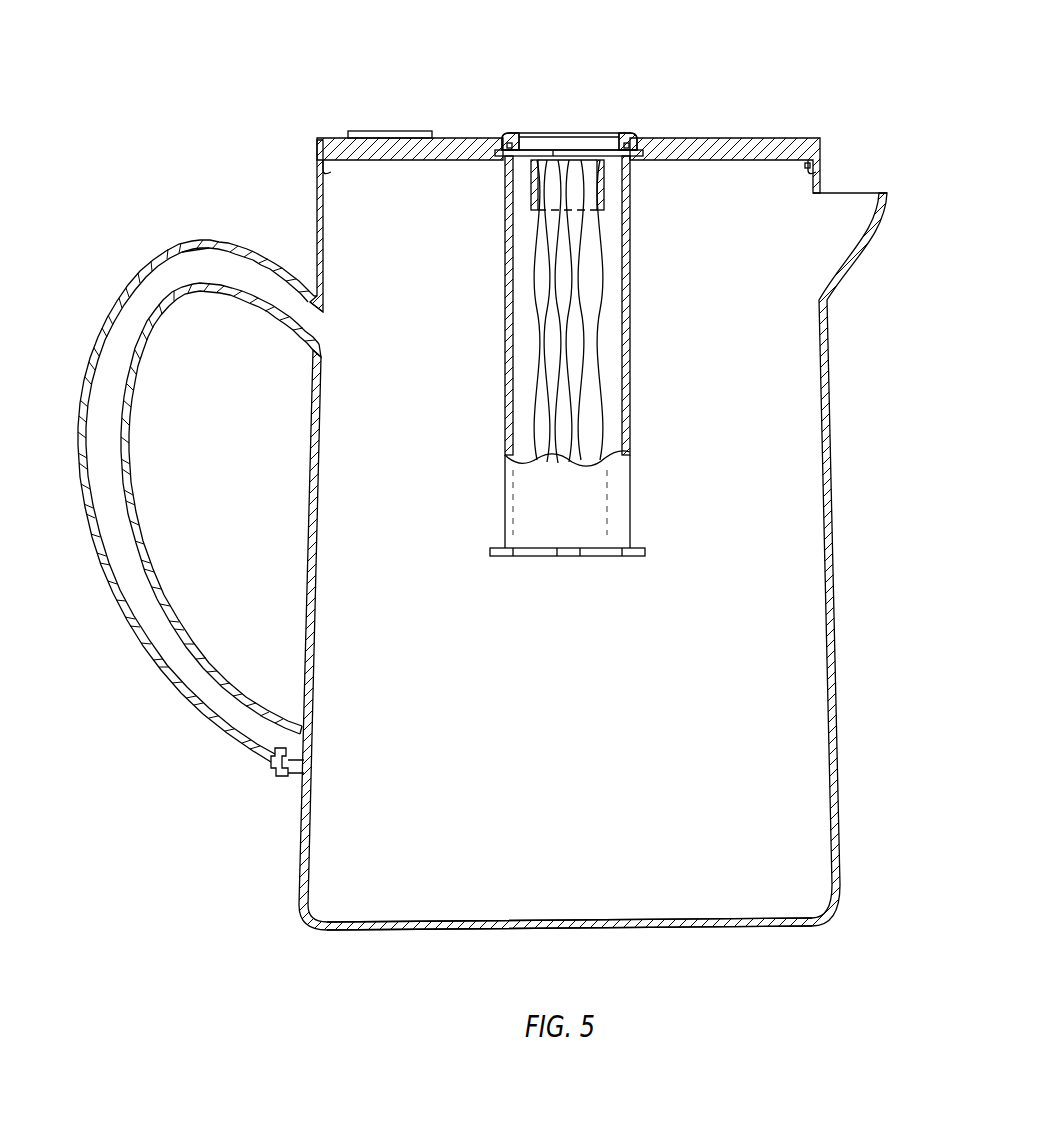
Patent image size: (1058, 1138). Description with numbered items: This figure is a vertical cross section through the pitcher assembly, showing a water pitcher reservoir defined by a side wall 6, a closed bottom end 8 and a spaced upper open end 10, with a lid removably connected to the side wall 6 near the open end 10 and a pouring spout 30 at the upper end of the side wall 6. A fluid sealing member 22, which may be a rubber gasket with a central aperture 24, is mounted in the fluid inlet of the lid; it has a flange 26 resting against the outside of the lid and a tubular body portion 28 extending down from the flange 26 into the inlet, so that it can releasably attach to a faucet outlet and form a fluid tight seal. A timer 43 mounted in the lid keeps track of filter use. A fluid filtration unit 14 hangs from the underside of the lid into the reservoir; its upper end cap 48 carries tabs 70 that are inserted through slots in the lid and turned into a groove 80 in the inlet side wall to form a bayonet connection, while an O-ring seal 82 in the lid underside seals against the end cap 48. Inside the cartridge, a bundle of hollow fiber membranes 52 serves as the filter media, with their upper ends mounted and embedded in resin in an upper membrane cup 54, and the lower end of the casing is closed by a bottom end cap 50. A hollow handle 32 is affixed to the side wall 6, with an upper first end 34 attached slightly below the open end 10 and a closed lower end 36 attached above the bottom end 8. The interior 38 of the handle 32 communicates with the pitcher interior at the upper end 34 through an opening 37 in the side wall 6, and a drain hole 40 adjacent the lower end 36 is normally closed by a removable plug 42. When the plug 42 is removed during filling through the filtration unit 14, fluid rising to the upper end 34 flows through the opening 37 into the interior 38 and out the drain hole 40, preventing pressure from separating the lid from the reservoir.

The side wall 6 is at (838, 650).
The closed bottom end 8 is at (683, 926).
The upper open end 10 is at (800, 143).
The fluid filtration unit 14 is at (634, 379).
The fluid sealing member 22 is at (632, 135).
The central aperture 24 is at (612, 140).
The flange 26 is at (518, 143).
The tubular body portion 28 is at (605, 135).
The pouring spout 30 is at (847, 198).
The handle 32 is at (190, 242).
The upper first end 34 is at (312, 290).
The lower end 36 is at (300, 723).
The opening 37 is at (317, 357).
The interior 38 is at (135, 290).
The drain hole 40 is at (273, 770).
The removable plug 42 is at (285, 750).
The timer 43 is at (388, 130).
The upper end cap 48 is at (553, 150).
The bottom end cap 50 is at (606, 562).
The hollow fiber membranes 52 is at (603, 312).
The upper membrane cup 54 is at (603, 185).
The tabs 70 is at (645, 152).
The groove 80 is at (641, 178).
The O-ring seal 82 is at (506, 150).